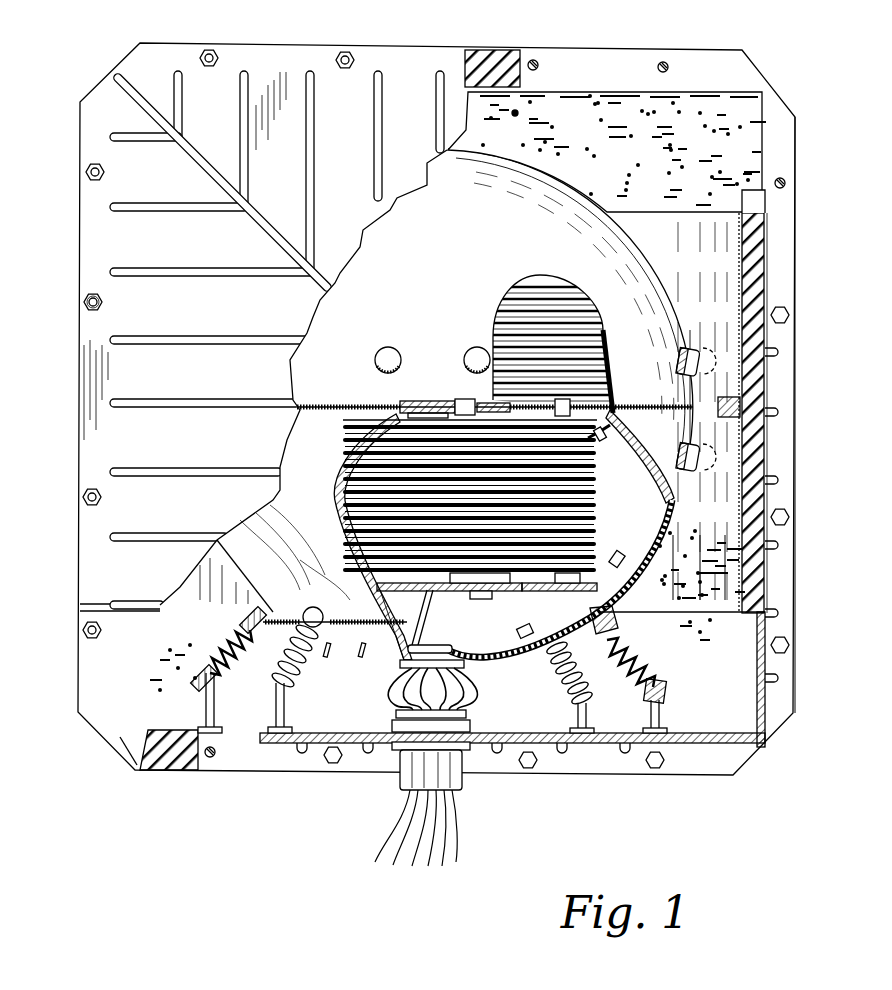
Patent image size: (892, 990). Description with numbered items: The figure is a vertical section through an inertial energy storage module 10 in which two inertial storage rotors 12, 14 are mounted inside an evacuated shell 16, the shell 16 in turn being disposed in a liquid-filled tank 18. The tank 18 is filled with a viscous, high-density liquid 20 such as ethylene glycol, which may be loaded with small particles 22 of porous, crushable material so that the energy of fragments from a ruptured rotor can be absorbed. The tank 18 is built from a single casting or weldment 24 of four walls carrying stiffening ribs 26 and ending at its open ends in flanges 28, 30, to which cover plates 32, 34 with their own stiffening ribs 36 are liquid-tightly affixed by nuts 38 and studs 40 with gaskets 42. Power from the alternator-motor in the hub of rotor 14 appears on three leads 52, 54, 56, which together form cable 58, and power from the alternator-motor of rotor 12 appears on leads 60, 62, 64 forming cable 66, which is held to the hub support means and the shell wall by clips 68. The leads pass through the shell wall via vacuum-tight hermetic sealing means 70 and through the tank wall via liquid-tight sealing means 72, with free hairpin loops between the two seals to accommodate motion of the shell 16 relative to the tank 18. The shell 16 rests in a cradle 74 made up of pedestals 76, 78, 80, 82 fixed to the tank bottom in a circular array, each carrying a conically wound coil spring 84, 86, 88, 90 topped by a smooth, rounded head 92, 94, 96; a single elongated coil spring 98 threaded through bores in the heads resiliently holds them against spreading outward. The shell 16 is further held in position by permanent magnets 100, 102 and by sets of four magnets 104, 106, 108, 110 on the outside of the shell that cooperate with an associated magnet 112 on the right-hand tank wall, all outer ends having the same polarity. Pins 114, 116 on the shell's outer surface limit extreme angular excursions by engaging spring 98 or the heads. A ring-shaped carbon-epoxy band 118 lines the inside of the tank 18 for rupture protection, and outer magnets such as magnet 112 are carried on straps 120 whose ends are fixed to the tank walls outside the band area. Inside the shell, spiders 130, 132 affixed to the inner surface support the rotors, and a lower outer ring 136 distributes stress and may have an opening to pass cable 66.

The inertial energy storage module 10 is at (131, 781).
The inertial storage rotor 12 is at (607, 405).
The inertial storage rotor 14 is at (603, 493).
The evacuated shell 16 is at (517, 193).
The liquid-filled tank 18 is at (768, 381).
The viscous high-density liquid 20 is at (607, 152).
The small particles 22 is at (517, 112).
The casting or weldment 24 is at (757, 690).
The stiffening ribs 26 is at (775, 482).
The flange 28 is at (782, 156).
The flange 30 is at (778, 245).
The cover plate 32 is at (217, 435).
The cover plate 34 is at (457, 610).
The stiffening ribs 36 is at (366, 138).
The nuts 38 is at (84, 305).
The studs 40 is at (86, 300).
The gaskets 42 is at (508, 50).
The lead 52 is at (395, 688).
The lead 54 is at (400, 702).
The lead 56 is at (410, 710).
The cable 58 is at (425, 628).
The lead 60 is at (462, 692).
The lead 62 is at (465, 703).
The lead 64 is at (468, 710).
The cable 66 is at (588, 430).
The clips 68 is at (598, 440).
The vacuum-tight hermetic sealing means 70 is at (406, 654).
The liquid-tight sealing means 72 is at (400, 776).
The cradle 74 is at (238, 627).
The pedestal 76 is at (206, 700).
The pedestal 78 is at (277, 700).
The pedestal 80 is at (578, 714).
The pedestal 82 is at (662, 706).
The conically wound coil spring 84 is at (211, 673).
The conically wound coil spring 86 is at (298, 678).
The conically wound coil spring 88 is at (562, 684).
The conically wound coil spring 90 is at (626, 650).
The head 92 is at (258, 616).
The head 94 is at (316, 610).
The head 96 is at (612, 613).
The elongated coil spring 98 is at (352, 621).
The permanent magnet 100 is at (386, 354).
The permanent magnet 102 is at (472, 354).
The permanent magnet 104 is at (682, 352).
The permanent magnet 106 is at (688, 448).
The permanent magnet 108 is at (716, 348).
The permanent magnet 110 is at (716, 450).
The permanent magnet 112 is at (730, 397).
The pin 114 is at (327, 658).
The pin 116 is at (362, 658).
The ring-shaped band 118 is at (766, 300).
The straps 120 is at (742, 212).
The spider 130 is at (538, 588).
The spider 132 is at (410, 401).
The outer ring 136 is at (590, 588).